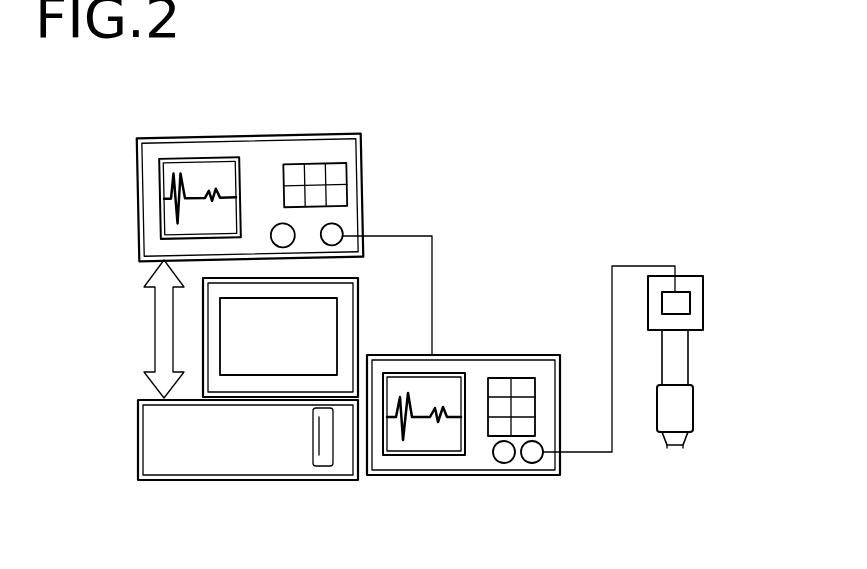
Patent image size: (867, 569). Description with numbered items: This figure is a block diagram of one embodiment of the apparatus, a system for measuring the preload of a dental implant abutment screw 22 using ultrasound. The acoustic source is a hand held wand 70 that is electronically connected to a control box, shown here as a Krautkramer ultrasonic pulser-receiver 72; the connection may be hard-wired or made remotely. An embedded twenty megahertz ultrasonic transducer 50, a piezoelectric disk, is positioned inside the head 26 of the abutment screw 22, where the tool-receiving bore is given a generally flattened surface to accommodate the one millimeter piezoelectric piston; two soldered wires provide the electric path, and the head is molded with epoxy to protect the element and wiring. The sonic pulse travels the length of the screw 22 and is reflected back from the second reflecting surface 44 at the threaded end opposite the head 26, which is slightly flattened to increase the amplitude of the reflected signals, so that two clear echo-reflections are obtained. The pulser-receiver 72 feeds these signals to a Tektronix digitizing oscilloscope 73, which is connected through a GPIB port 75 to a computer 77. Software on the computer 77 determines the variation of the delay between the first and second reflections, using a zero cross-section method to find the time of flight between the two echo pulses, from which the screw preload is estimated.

The digitizing oscilloscope 73 is at (362, 150).
The computer 77 is at (245, 481).
The GPIB port 75 is at (146, 284).
The ultrasonic pulser-receiver 72 is at (456, 476).
The ultrasonic transducer 50 is at (660, 294).
The head 26 is at (705, 292).
The hand held wand 70 is at (650, 266).
The abutment screw 22 is at (690, 360).
The second reflecting surface 44 is at (675, 448).